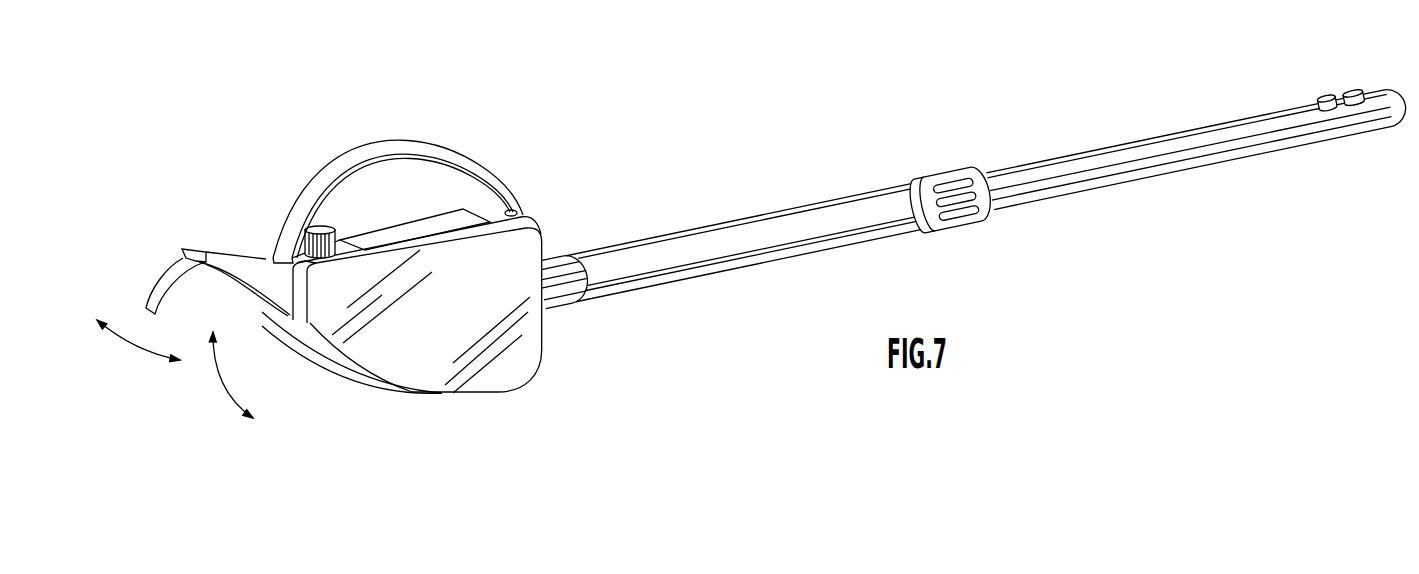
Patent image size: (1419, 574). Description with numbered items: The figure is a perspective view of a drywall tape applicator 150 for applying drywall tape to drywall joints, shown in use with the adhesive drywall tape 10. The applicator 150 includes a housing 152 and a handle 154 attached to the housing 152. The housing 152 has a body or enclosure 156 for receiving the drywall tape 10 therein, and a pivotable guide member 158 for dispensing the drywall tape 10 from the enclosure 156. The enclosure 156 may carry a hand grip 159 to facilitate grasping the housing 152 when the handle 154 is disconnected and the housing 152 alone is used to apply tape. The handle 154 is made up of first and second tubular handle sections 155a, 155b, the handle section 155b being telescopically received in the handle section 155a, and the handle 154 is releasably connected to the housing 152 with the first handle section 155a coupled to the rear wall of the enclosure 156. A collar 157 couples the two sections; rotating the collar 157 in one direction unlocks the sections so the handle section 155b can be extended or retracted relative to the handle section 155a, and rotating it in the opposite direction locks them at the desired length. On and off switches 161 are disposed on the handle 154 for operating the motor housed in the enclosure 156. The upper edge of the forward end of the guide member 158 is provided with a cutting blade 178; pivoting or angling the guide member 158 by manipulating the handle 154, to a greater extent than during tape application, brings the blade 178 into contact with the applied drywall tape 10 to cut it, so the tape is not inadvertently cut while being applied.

The drywall tape 10 is at (143, 284).
The drywall tape applicator 150 is at (972, 177).
The housing 152 is at (401, 398).
The handle 154 is at (972, 177).
The first handle section 155a is at (747, 267).
The second handle section 155b is at (1197, 127).
The enclosure 156 is at (517, 370).
The collar 157 is at (962, 222).
The guide member 158 is at (209, 248).
The hand grip 159 is at (418, 145).
The switches 161 is at (1379, 99).
The cutting blade 178 is at (190, 258).